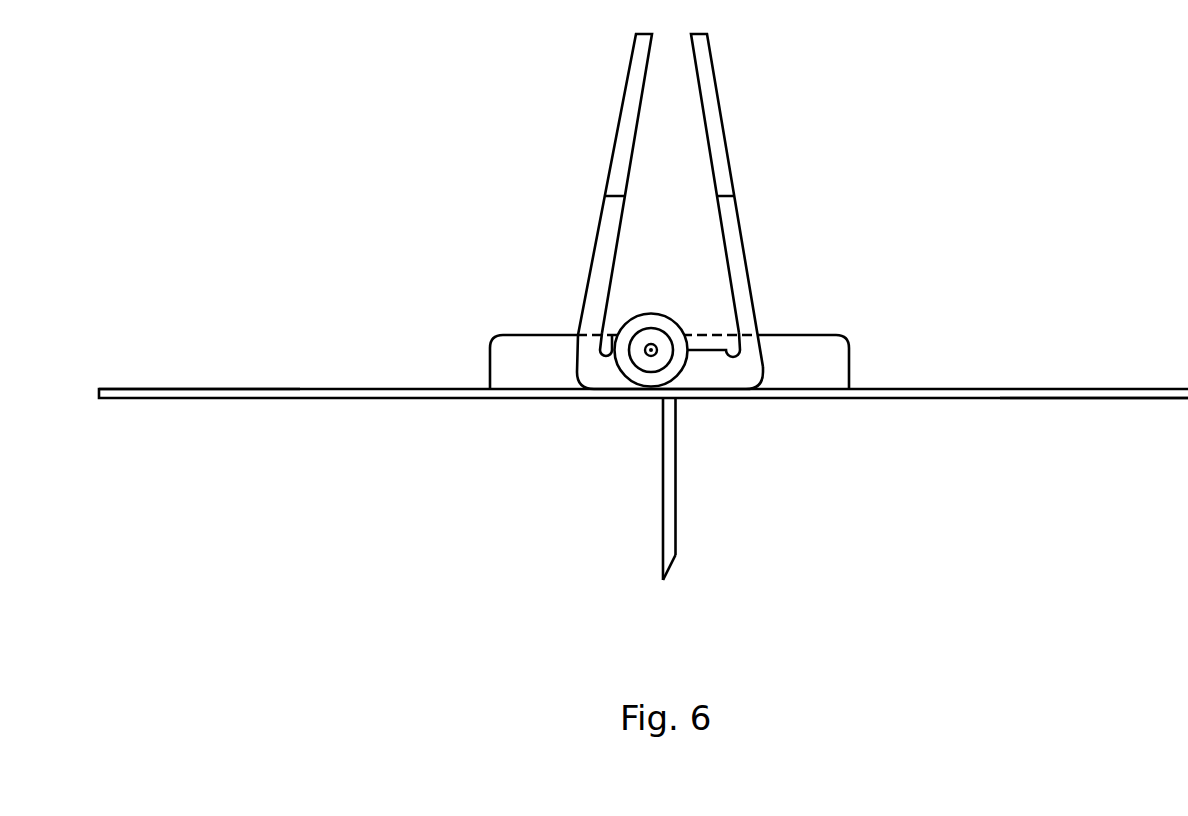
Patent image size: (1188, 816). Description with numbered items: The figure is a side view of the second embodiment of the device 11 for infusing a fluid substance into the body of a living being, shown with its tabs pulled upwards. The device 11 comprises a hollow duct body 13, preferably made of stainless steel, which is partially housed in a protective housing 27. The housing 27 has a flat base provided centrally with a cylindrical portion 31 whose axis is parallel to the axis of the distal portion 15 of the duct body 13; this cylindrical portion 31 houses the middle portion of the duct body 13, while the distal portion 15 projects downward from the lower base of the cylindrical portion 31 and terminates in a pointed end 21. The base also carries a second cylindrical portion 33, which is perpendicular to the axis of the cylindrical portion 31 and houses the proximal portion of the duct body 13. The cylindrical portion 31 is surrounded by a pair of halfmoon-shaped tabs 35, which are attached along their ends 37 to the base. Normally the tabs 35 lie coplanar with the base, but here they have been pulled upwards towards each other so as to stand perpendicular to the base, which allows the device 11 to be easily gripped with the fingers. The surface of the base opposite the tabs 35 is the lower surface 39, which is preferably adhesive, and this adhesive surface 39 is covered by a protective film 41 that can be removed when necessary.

The device 11 is at (285, 591).
The hollow duct body 13 is at (643, 366).
The distal portion 15 is at (677, 455).
The pointed end 21 is at (663, 565).
The protective housing 27 is at (529, 297).
The cylindrical portion 31 is at (832, 362).
The second cylindrical portion 33 is at (649, 313).
The halfmoon-shaped tabs 35 is at (613, 142).
The ends 37 is at (585, 362).
The lower surface 39 is at (1071, 406).
The protective film 41 is at (347, 398).